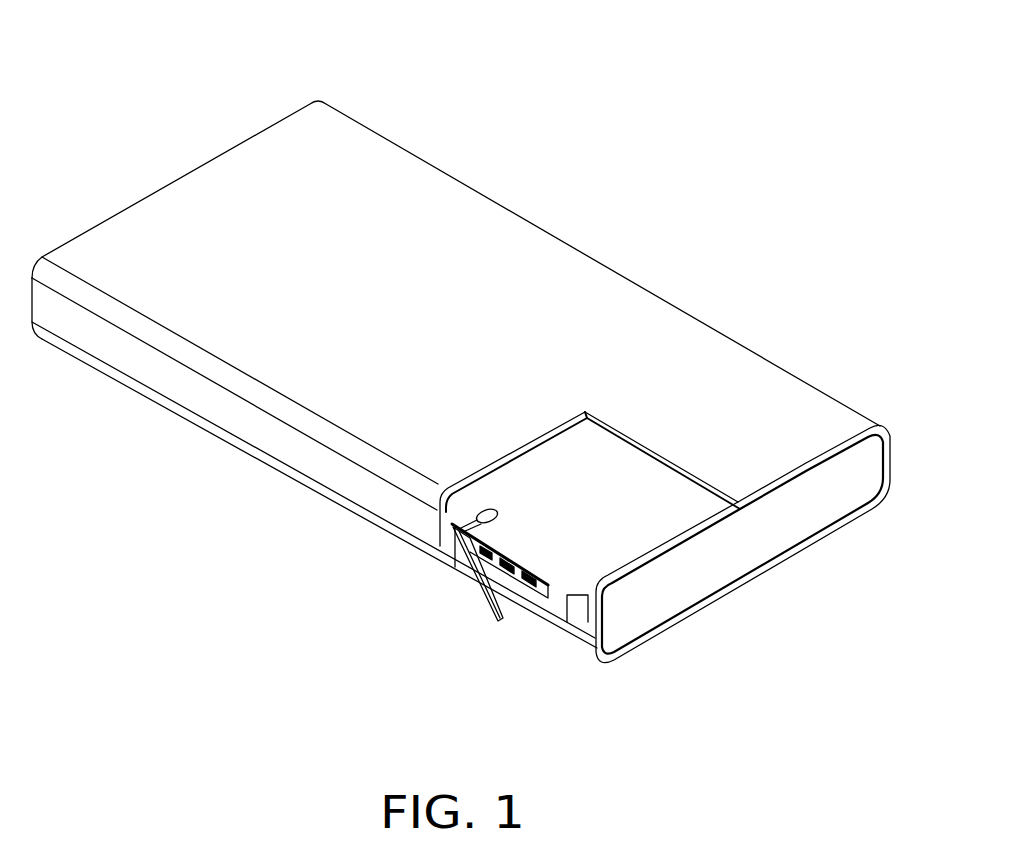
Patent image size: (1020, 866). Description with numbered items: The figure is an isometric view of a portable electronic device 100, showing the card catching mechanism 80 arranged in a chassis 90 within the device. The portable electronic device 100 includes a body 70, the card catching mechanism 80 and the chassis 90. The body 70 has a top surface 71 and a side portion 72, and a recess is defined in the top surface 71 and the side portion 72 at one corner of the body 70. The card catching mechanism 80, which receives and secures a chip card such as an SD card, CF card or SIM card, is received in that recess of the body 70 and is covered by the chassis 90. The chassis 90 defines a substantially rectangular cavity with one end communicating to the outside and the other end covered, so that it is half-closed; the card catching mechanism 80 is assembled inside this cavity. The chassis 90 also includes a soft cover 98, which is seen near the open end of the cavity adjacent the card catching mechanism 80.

The portable electronic device 100 is at (511, 90).
The body 70 is at (167, 427).
The top surface 71 is at (735, 442).
The side portion 72 is at (318, 448).
The card catching mechanism 80 is at (523, 583).
The chassis 90 is at (580, 572).
The soft cover 98 is at (480, 550).